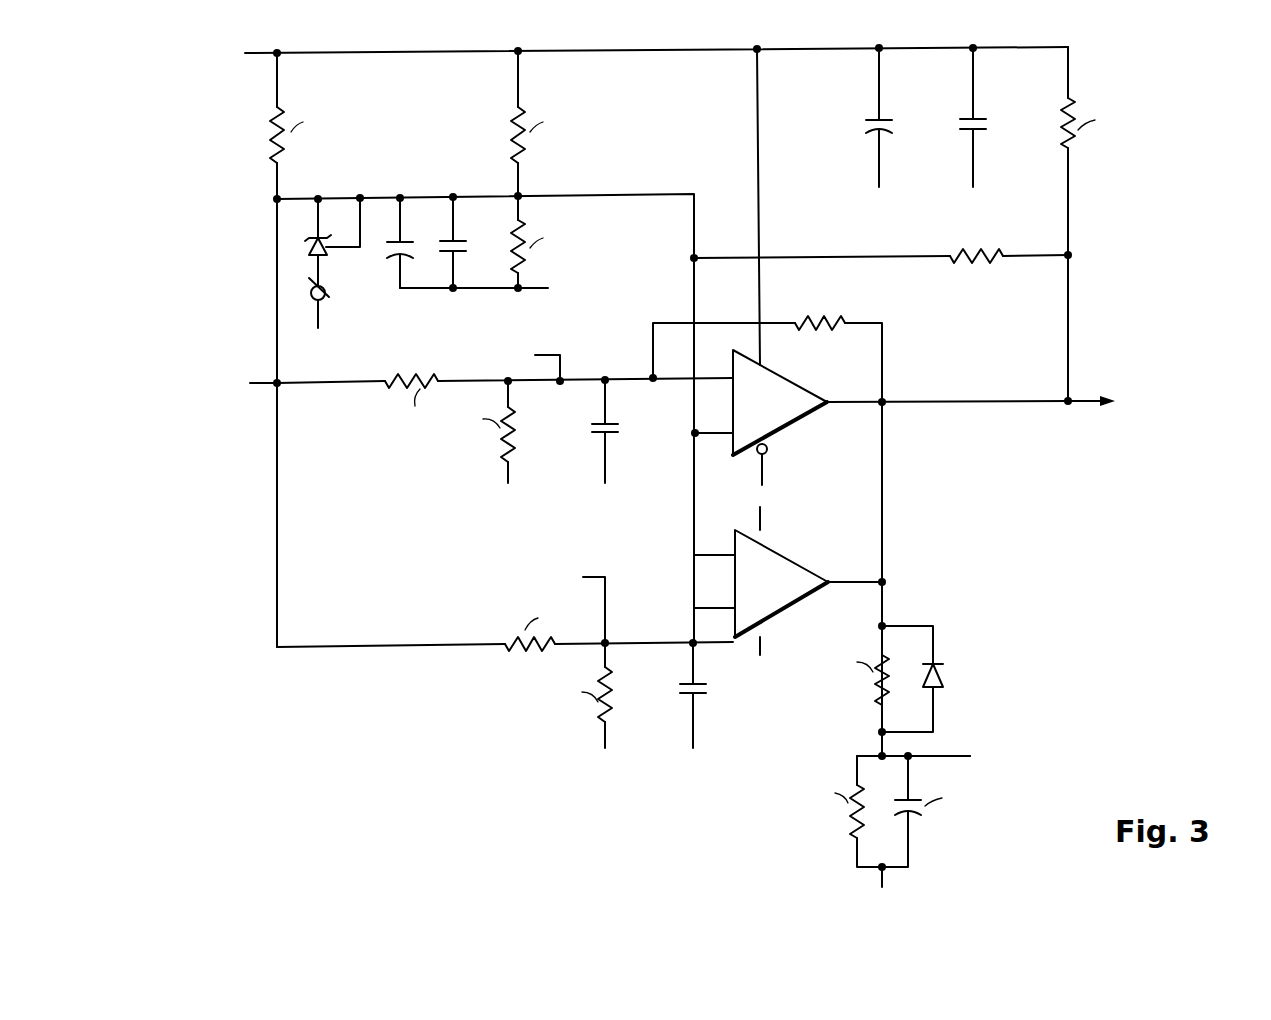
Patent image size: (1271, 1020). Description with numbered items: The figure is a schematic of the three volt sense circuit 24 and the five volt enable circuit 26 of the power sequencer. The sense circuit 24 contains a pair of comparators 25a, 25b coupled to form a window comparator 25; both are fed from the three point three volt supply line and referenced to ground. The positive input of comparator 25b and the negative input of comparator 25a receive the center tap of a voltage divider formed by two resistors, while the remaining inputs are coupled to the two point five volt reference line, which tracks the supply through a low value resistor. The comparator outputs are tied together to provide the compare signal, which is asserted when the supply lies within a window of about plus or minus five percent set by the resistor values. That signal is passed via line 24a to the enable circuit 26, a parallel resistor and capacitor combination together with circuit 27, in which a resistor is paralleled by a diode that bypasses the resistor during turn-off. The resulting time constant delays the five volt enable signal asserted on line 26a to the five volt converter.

The 3 volt sense circuit 24 is at (398, 683).
The line 24a is at (1082, 404).
The window comparator 25 is at (828, 512).
The comparator 25a is at (790, 382).
The comparator 25b is at (790, 562).
The 5 volt enable circuit 26 is at (929, 758).
The line 26a is at (953, 756).
The circuit 27 is at (950, 637).